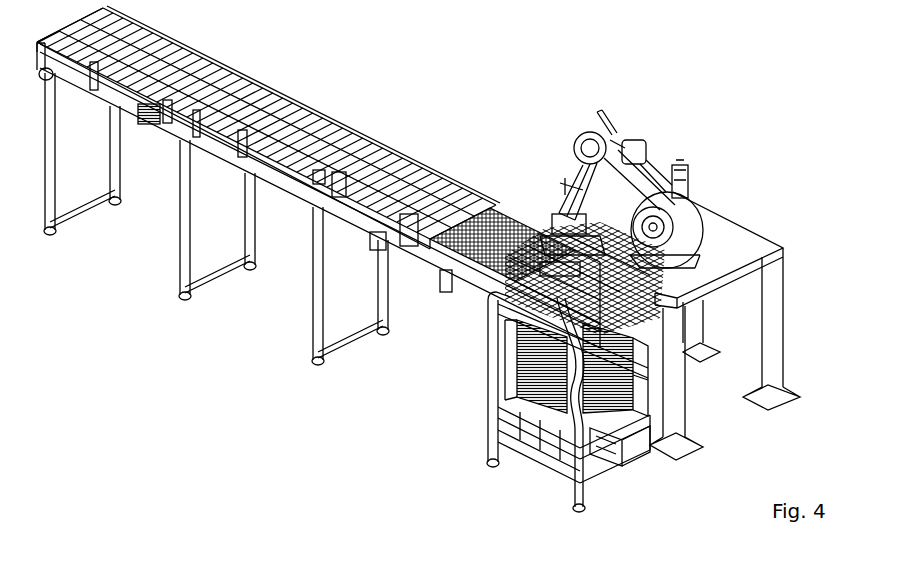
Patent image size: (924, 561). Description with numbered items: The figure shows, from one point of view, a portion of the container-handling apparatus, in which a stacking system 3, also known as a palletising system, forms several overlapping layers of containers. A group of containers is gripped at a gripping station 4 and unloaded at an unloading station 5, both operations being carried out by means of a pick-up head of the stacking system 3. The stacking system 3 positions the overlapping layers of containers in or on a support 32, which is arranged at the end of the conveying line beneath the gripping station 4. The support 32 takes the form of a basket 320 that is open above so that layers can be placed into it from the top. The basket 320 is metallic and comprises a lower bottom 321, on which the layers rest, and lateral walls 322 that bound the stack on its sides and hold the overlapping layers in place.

The stacking system 3 is at (553, 200).
The gripping station 4 is at (490, 205).
The support 32 is at (587, 419).
The basket 320 is at (505, 385).
The lower bottom 321 is at (553, 433).
The lateral walls 322 is at (637, 365).
The unloading station 5 is at (617, 442).